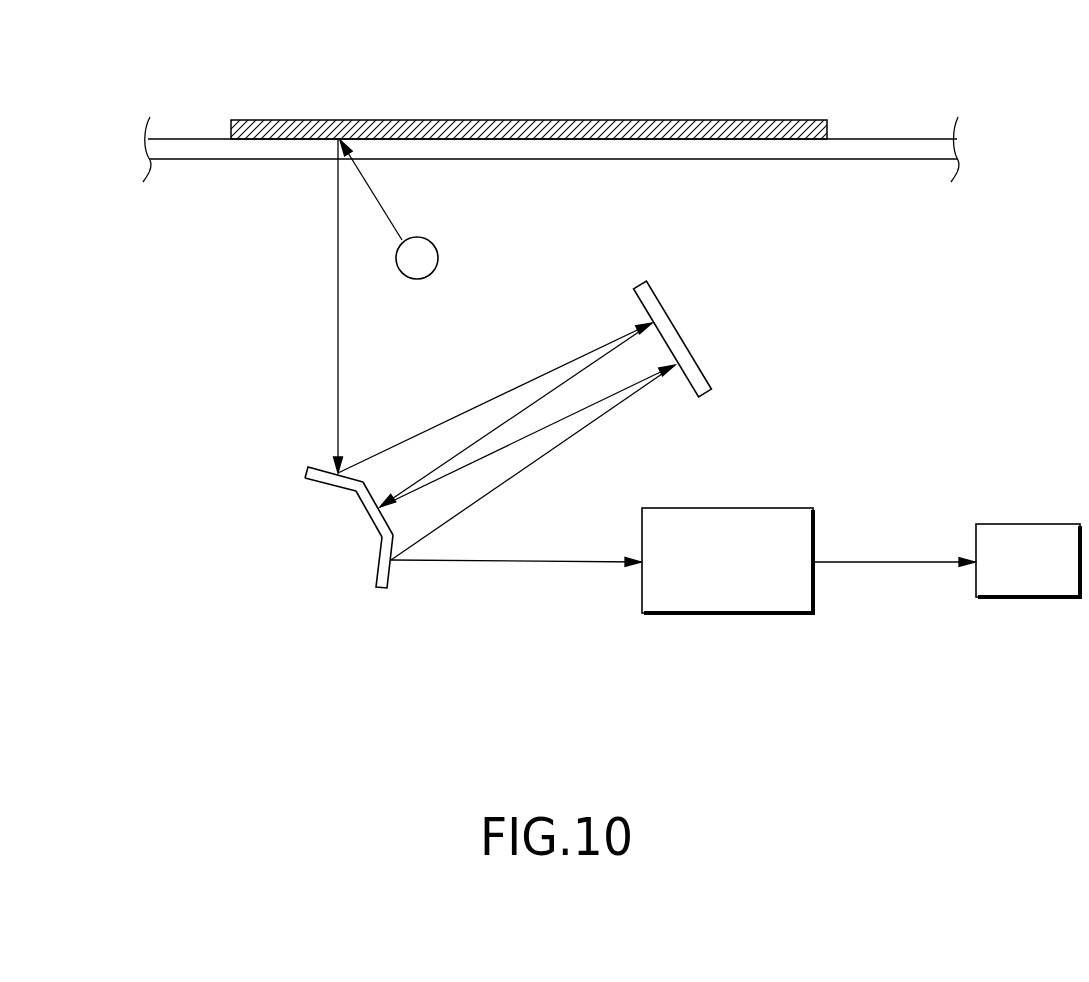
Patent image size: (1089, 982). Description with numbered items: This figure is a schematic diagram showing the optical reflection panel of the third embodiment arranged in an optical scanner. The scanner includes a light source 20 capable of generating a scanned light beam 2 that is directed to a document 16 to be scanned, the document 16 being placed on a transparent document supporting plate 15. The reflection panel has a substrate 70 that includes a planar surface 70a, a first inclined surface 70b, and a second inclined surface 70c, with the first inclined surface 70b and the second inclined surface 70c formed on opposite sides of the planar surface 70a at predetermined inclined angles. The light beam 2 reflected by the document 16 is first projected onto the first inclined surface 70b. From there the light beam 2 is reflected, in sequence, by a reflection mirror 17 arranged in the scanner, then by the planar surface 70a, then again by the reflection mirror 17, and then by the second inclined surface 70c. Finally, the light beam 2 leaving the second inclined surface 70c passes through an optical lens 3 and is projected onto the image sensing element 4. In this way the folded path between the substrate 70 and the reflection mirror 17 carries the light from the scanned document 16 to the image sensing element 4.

The scanned light beam 2 is at (338, 288).
The optical lens 3 is at (780, 520).
The image sensing element 4 is at (1012, 528).
The transparent document supporting plate 15 is at (723, 152).
The document 16 is at (630, 121).
The reflection mirror 17 is at (673, 338).
The light source 20 is at (438, 258).
The substrate 70 is at (334, 531).
The planar surface 70a is at (379, 497).
The first inclined surface 70b is at (328, 465).
The second inclined surface 70c is at (388, 578).